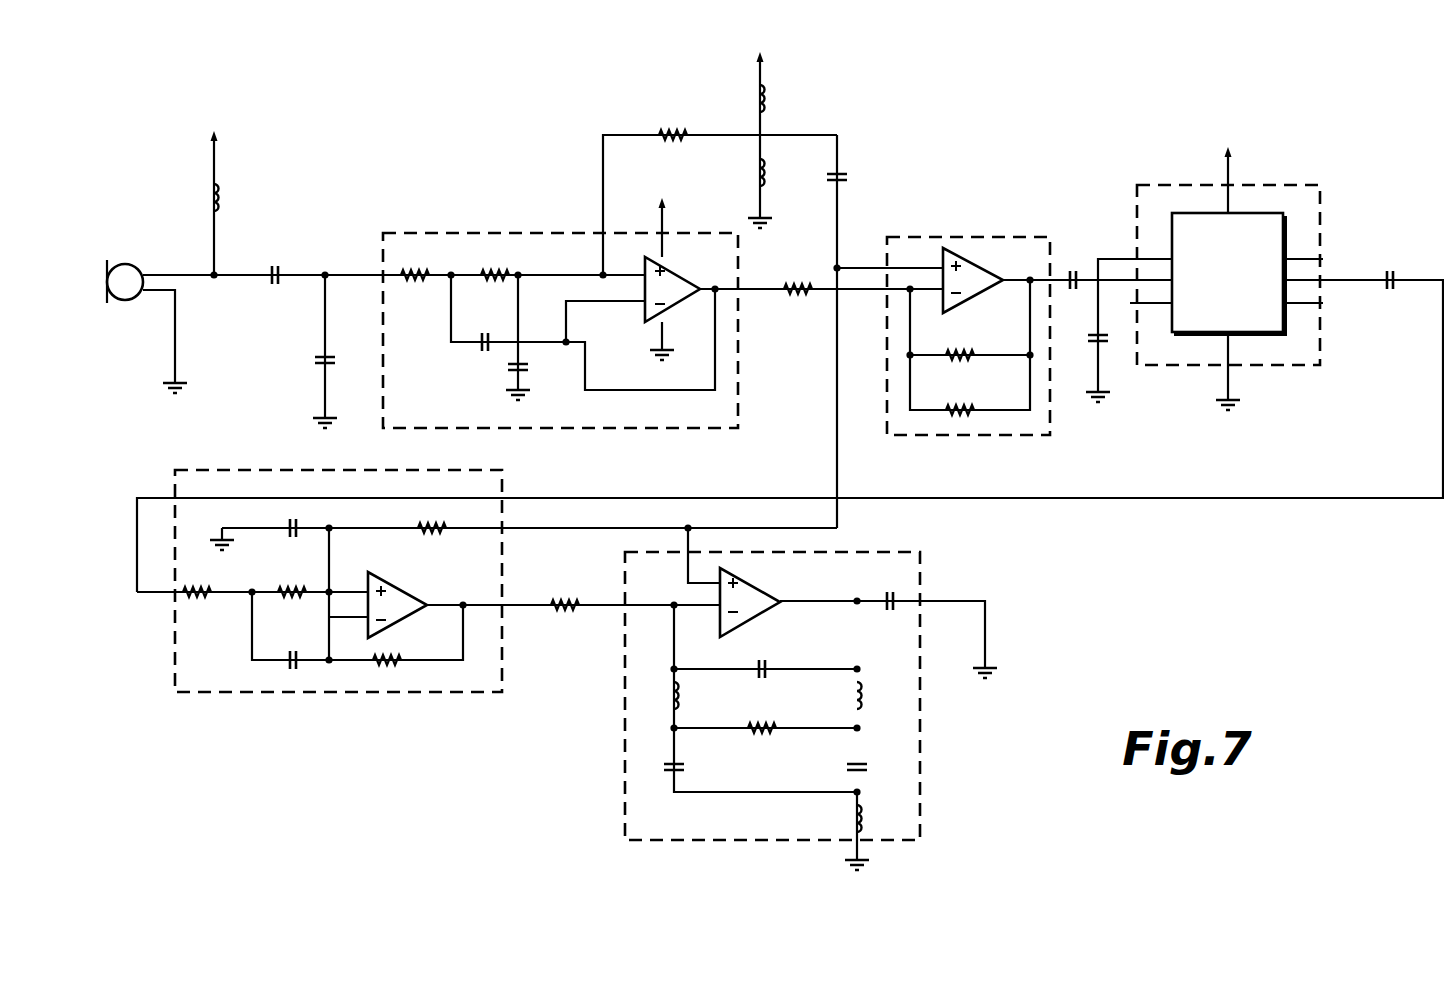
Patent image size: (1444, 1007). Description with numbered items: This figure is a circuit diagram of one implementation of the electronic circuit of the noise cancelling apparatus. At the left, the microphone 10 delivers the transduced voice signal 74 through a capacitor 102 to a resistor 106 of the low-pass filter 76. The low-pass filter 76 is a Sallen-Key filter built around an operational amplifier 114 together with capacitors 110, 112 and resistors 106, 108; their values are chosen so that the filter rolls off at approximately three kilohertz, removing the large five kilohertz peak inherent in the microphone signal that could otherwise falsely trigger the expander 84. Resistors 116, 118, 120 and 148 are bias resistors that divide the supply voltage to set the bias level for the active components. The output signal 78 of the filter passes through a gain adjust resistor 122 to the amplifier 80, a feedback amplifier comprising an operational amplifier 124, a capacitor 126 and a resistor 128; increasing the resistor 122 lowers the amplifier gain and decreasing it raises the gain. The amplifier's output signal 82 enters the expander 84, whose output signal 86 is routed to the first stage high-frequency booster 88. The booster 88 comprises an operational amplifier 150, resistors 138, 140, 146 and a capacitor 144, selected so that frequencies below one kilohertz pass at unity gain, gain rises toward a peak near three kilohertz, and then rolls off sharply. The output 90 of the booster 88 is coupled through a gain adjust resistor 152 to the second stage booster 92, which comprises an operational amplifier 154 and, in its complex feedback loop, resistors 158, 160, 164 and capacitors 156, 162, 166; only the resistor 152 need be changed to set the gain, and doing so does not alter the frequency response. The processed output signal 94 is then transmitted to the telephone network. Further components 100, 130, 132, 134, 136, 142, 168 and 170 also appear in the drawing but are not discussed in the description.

The microphone 10 is at (122, 302).
The input signal 74 is at (168, 272).
The low-pass filter 76 is at (517, 232).
The output signal 78 is at (757, 289).
The amplifier 80 is at (965, 236).
The output signal 82 is at (1113, 284).
The expander 84 is at (1288, 183).
The output signal 86 is at (1350, 276).
The first stage high-frequency booster 88 is at (425, 695).
The output 90 is at (523, 605).
The second stage high-frequency booster 92 is at (893, 552).
The output signal 94 is at (987, 632).
The inductor 100 is at (216, 188).
The capacitor 102 is at (267, 270).
The resistor 106 is at (420, 273).
The resistor 108 is at (493, 285).
The capacitor 110 is at (477, 346).
The capacitor 112 is at (526, 368).
The operational amplifier 114 is at (672, 284).
The bias resistor 116 is at (670, 130).
The bias resistor 118 is at (765, 98).
The bias resistor 120 is at (765, 176).
The gain adjust resistor 122 is at (800, 298).
The operational amplifier 124 is at (937, 262).
The capacitor 126 is at (962, 348).
The resistor 128 is at (962, 403).
The coupling capacitor 130 is at (1078, 272).
The capacitor 132 is at (1090, 345).
The output capacitor 134 is at (1393, 287).
The capacitor 136 is at (318, 367).
The resistor 138 is at (208, 600).
The resistor 140 is at (298, 600).
The capacitor 142 is at (290, 532).
The capacitor 144 is at (300, 668).
The resistor 146 is at (398, 655).
The bias resistor 148 is at (437, 532).
The operational amplifier 150 is at (380, 590).
The gain adjust resistor 152 is at (565, 612).
The operational amplifier 154 is at (762, 590).
The capacitor 156 is at (770, 665).
The resistor 158 is at (680, 695).
The resistor 160 is at (768, 723).
The capacitor 162 is at (681, 772).
The resistor 164 is at (863, 698).
The capacitor 166 is at (866, 772).
The inductor 168 is at (850, 822).
The output capacitor 170 is at (898, 597).